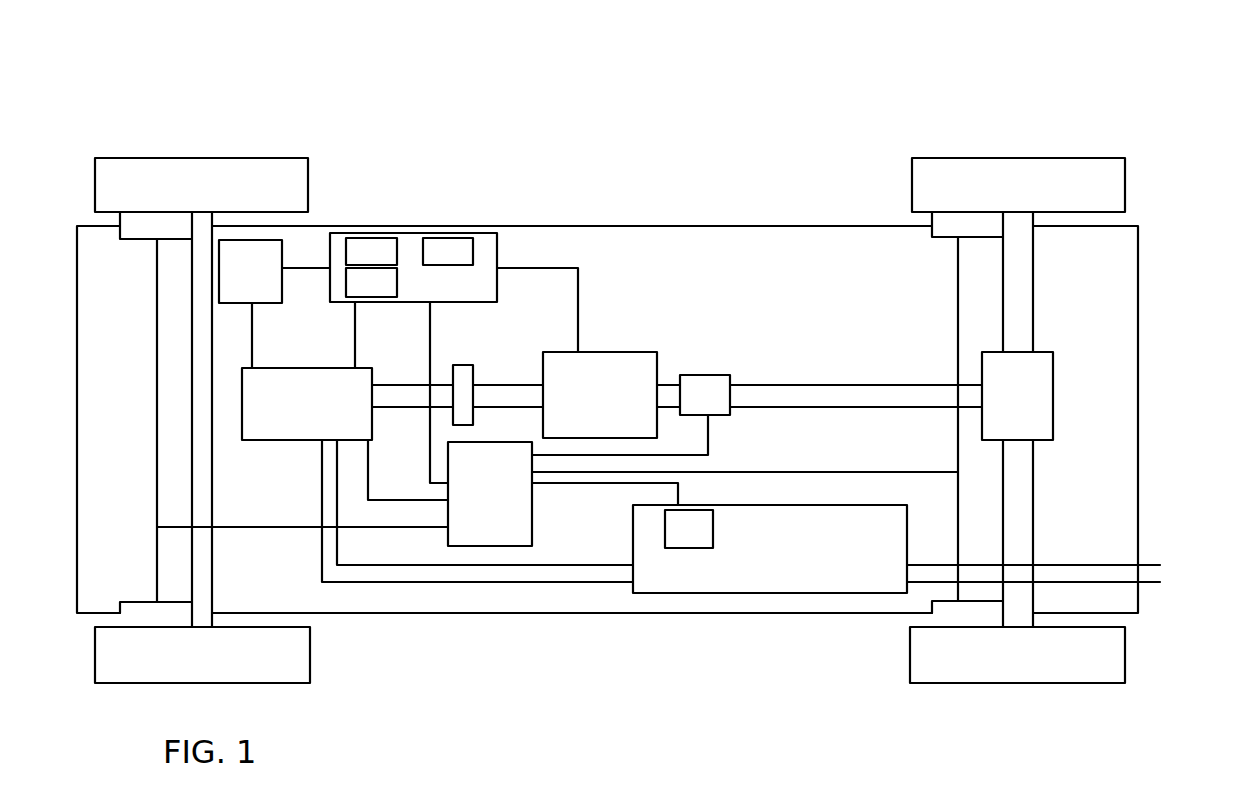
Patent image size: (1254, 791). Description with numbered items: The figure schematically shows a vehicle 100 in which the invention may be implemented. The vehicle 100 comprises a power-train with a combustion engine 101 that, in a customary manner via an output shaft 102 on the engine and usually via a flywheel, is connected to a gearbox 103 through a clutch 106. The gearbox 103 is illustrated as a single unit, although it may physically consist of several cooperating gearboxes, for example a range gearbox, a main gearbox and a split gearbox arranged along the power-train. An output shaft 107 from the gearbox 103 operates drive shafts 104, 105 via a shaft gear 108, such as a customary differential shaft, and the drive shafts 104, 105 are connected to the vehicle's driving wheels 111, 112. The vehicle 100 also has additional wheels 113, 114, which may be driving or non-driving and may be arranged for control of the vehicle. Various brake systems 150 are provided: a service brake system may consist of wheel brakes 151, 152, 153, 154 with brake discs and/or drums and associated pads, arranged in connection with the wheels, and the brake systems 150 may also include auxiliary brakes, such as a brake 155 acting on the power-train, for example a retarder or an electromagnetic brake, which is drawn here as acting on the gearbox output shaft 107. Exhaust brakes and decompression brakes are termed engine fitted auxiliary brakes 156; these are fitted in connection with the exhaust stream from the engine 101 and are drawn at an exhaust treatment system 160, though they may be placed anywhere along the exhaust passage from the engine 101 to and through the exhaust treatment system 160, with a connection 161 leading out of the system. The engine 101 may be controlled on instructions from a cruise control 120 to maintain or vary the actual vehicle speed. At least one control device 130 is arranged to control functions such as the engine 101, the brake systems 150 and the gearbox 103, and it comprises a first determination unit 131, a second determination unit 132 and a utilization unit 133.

The vehicle 100 is at (515, 72).
The combustion engine 101 is at (290, 430).
The output shaft 102 is at (392, 387).
The gearbox 103 is at (602, 364).
The drive shaft 104 is at (1020, 278).
The drive shaft 105 is at (1028, 537).
The clutch 106 is at (462, 377).
The output shaft 107 is at (760, 392).
The shaft gear 108 is at (1047, 388).
The driving wheel 111 is at (1120, 655).
The driving wheel 112 is at (1120, 178).
The additional wheel 113 is at (308, 167).
The additional wheel 114 is at (308, 655).
The cruise control 120 is at (250, 271).
The control device 130 is at (477, 287).
The first determination unit 131 is at (371, 251).
The second determination unit 132 is at (448, 251).
The utilization unit 133 is at (371, 282).
The brake systems 150 is at (490, 494).
The wheel brake 151 is at (940, 608).
The wheel brake 152 is at (940, 228).
The wheel brake 153 is at (148, 228).
The wheel brake 154 is at (122, 608).
The brake 155 is at (705, 383).
The engine fitted auxiliary brakes 156 is at (683, 538).
The exhaust treatment system 160 is at (790, 595).
The external connection 161 is at (1140, 570).